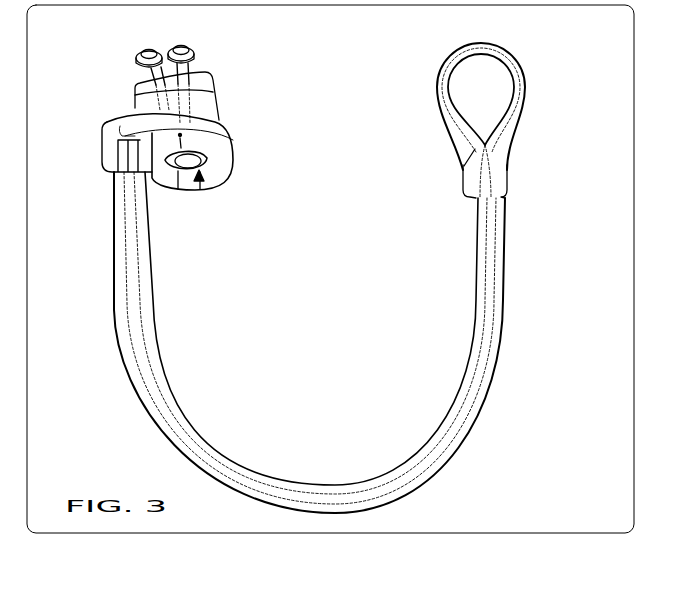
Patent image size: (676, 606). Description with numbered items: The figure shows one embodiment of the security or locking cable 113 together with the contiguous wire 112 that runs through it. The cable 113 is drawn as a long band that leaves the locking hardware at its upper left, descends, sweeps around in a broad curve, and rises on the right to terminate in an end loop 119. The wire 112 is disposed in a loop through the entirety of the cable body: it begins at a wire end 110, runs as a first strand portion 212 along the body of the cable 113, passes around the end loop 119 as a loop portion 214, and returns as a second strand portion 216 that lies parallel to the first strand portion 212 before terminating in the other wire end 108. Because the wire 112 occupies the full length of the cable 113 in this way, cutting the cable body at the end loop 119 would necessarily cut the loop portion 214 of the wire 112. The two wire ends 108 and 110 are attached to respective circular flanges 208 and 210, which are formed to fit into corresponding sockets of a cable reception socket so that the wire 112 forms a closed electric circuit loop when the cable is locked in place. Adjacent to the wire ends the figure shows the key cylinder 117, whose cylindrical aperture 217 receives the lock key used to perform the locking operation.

The wire end 108 is at (196, 68).
The wire end 110 is at (150, 72).
The contiguous wire 112 is at (150, 355).
The security or locking cable 113 is at (112, 296).
The key cylinder 117 is at (215, 140).
The end loop 119 is at (430, 119).
The circular flange 208 is at (190, 46).
The circular flange 210 is at (140, 52).
The first strand portion 212 is at (126, 240).
The loop portion 214 is at (463, 164).
The second strand portion 216 is at (143, 247).
The cylindrical aperture 217 is at (198, 187).